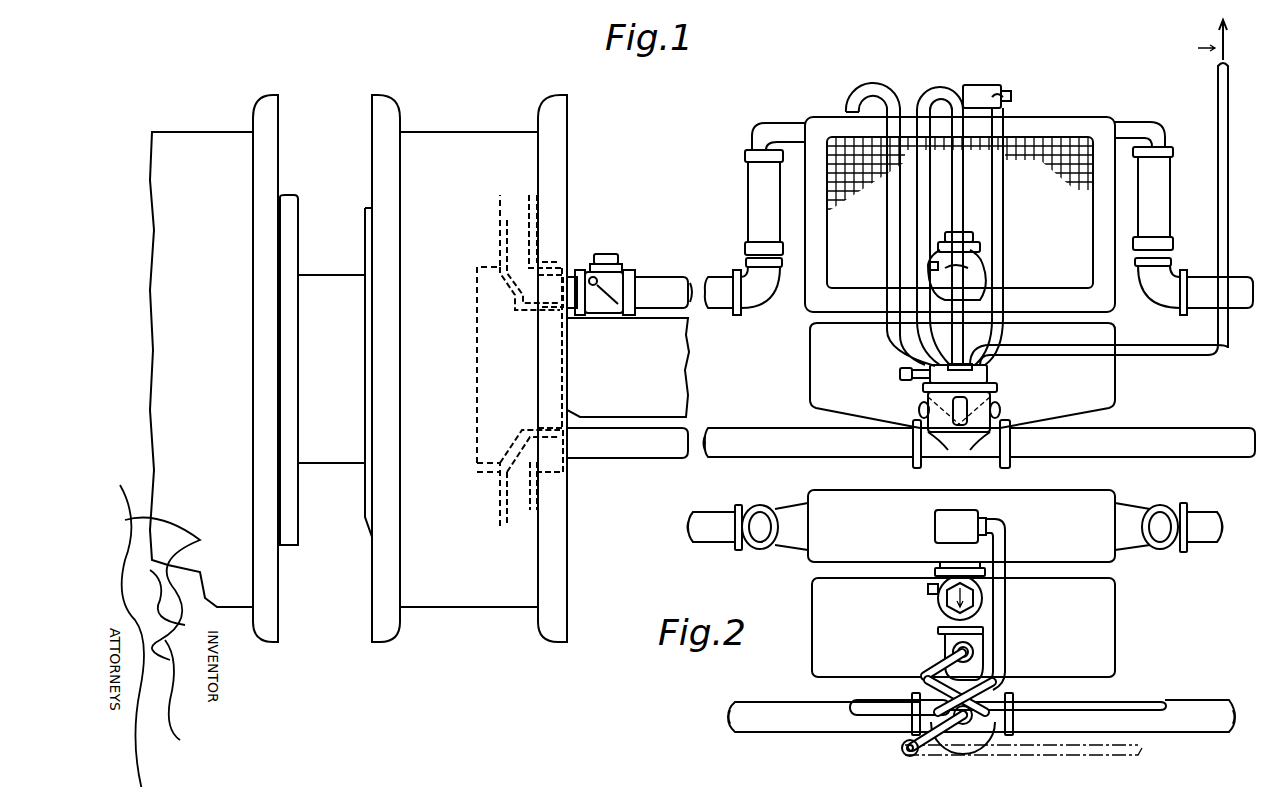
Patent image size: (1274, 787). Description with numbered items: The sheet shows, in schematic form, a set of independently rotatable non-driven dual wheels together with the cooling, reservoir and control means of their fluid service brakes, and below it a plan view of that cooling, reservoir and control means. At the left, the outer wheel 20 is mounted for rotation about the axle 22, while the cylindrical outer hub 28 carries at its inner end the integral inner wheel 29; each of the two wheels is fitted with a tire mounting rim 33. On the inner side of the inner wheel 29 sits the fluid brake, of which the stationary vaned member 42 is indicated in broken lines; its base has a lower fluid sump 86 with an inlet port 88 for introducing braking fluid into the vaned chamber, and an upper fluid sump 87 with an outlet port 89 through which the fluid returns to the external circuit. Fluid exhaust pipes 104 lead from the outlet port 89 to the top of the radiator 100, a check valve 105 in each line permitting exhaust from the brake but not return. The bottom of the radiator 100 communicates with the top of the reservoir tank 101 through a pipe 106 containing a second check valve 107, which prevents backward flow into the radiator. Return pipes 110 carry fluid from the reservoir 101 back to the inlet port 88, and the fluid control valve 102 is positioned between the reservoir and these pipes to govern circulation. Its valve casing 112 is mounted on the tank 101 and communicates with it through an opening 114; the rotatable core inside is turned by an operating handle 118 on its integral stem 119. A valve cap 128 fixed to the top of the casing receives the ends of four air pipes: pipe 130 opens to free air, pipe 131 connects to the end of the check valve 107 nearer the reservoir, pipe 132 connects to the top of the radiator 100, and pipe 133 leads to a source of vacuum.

In FIG. 1, the outer wheel 20 is at (290, 194).
In FIG. 1, the axle 22 is at (653, 383).
In FIG. 1, the cylindrical outer hub 28 is at (322, 276).
In FIG. 1, the inner wheel 29 is at (365, 211).
In FIG. 1, the tire mounting rim 33 is at (175, 133).
In FIG. 1, the stationary vaned member 42 is at (475, 333).
In FIG. 1, the lower fluid sump 86 is at (528, 432).
In FIG. 1, the upper fluid sump 87 is at (518, 307).
In FIG. 1, the inlet port 88 is at (555, 476).
In FIG. 1, the outlet port 89 is at (554, 272).
In FIG. 1, the radiator 100 is at (1069, 122).
In FIG. 2, the radiator 100 is at (852, 506).
In FIG. 1, the reservoir tank 101 is at (815, 360).
In FIG. 2, the reservoir tank 101 is at (1100, 620).
In FIG. 1, the fluid control valve 102 is at (1000, 388).
In FIG. 2, the fluid control valve 102 is at (982, 737).
In FIG. 1, the fluid exhaust pipe 104 is at (675, 282).
In FIG. 2, the fluid exhaust pipe 104 is at (705, 522).
In FIG. 1, the check valve 105 is at (606, 262).
In FIG. 2, the pipe 106 is at (935, 569).
In FIG. 1, the check valve 107 is at (985, 258).
In FIG. 2, the check valve 107 is at (945, 605).
In FIG. 1, the return pipe 110 is at (766, 433).
In FIG. 2, the return pipe 110 is at (793, 688).
In FIG. 1, the valve casing 112 is at (928, 400).
In FIG. 1, the opening 114 is at (967, 410).
In FIG. 1, the operating handle 118 is at (900, 374).
In FIG. 2, the operating handle 118 is at (902, 749).
In FIG. 2, the stem 119 is at (1000, 718).
In FIG. 1, the valve cap 128 is at (930, 369).
In FIG. 1, the air pipe 130 is at (888, 215).
In FIG. 2, the air pipe 130 is at (900, 688).
In FIG. 1, the air pipe 131 is at (955, 213).
In FIG. 2, the air pipe 131 is at (945, 660).
In FIG. 1, the air pipe 132 is at (1001, 216).
In FIG. 2, the air pipe 132 is at (1004, 600).
In FIG. 1, the air pipe 133 is at (1218, 80).
In FIG. 2, the air pipe 133 is at (1085, 708).